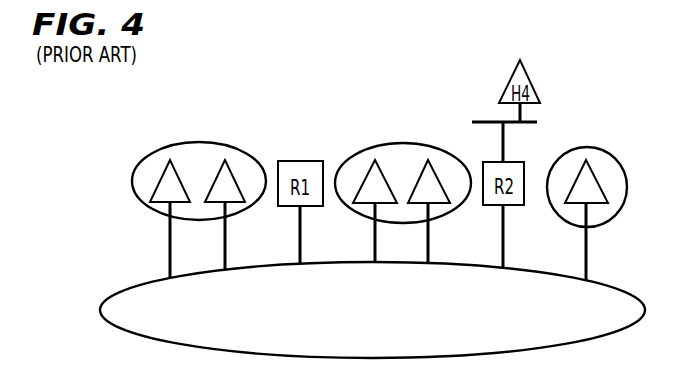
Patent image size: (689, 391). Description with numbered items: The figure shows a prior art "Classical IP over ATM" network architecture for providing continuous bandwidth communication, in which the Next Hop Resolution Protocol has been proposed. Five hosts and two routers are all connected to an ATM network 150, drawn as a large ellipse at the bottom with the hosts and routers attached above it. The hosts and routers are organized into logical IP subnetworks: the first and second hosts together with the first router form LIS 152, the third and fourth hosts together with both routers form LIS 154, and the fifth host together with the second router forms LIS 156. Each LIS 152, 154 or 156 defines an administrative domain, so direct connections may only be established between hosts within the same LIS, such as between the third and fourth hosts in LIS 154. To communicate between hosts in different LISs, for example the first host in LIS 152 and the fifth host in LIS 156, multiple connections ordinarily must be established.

The ATM network 150 is at (139, 283).
The logical IP subnetwork (LIS) 152 is at (150, 156).
The logical IP subnetwork (LIS) 154 is at (382, 145).
The logical IP subnetwork (LIS) 156 is at (607, 148).